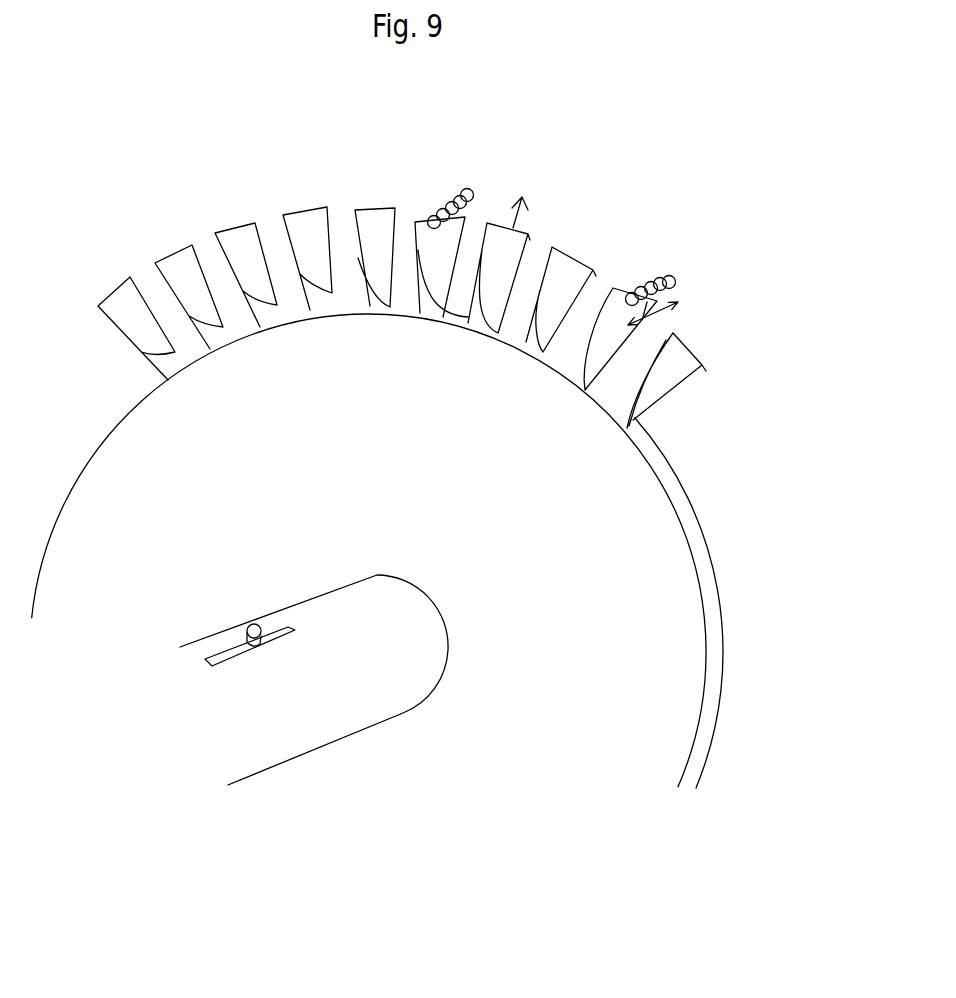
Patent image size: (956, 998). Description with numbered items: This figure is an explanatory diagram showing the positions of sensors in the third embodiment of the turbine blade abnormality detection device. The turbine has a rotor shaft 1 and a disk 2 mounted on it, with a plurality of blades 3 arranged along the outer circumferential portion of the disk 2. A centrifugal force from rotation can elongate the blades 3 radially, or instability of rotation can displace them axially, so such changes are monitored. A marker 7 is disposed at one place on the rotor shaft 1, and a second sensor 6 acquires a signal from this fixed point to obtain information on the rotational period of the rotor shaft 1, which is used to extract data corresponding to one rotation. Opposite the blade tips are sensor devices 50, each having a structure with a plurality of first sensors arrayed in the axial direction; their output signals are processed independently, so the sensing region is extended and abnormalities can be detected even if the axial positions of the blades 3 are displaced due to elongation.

The rotor shaft 1 is at (365, 613).
The disk 2 is at (645, 517).
The blades 3 is at (248, 255).
The second sensor 6 is at (250, 627).
The marker 7 is at (213, 658).
The sensor device 50 is at (473, 190).